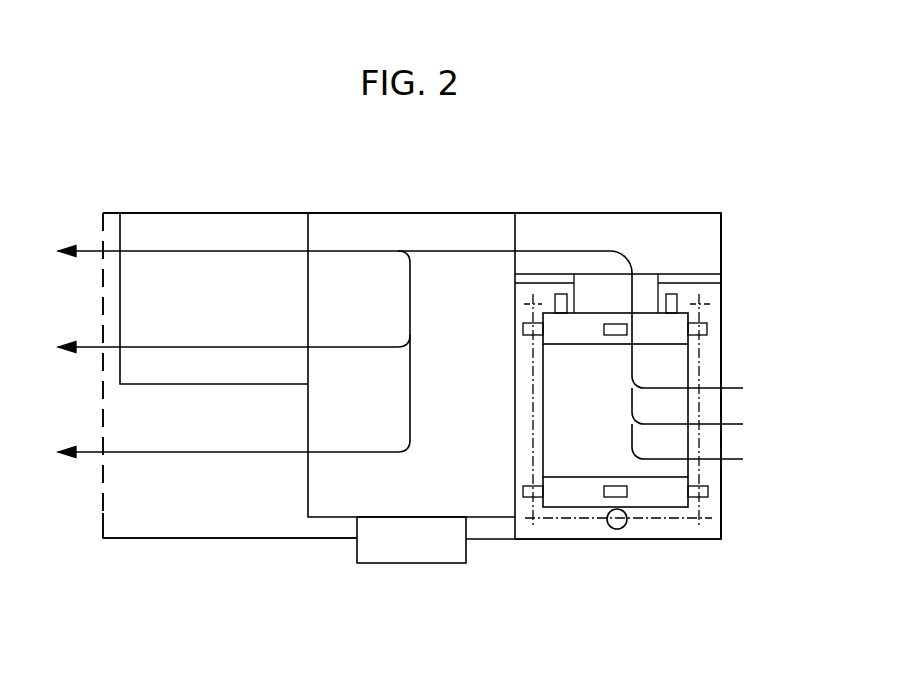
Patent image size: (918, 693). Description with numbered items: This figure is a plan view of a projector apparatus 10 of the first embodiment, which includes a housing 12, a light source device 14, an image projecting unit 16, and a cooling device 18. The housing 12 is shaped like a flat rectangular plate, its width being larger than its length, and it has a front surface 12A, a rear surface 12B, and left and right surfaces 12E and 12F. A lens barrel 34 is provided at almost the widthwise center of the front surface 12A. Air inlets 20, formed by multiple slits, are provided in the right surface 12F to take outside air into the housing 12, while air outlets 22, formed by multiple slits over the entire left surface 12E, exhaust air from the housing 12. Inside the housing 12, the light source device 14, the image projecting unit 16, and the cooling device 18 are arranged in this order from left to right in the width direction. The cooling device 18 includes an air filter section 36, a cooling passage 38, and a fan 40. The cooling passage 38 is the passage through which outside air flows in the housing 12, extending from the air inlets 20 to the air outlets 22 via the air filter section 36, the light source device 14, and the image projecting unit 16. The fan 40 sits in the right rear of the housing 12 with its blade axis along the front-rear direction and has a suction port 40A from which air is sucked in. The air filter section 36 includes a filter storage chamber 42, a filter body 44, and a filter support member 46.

The projector apparatus 10 is at (343, 170).
The housing 12 is at (450, 213).
The front surface 12A is at (160, 540).
The rear surface 12B is at (147, 213).
The left surface 12E is at (101, 523).
The right surface 12F is at (722, 521).
The light source device 14 is at (255, 230).
The image projecting unit 16 is at (399, 235).
The cooling device 18 is at (620, 189).
The air inlets 20 is at (723, 383).
The air outlets 22 is at (101, 372).
The lens barrel 34 is at (402, 550).
The air filter section 36 is at (692, 355).
The cooling passage 38 is at (558, 250).
The fan 40 is at (710, 237).
The suction port 40A is at (652, 288).
The filter storage chamber 42 is at (678, 513).
The filter body 44 is at (565, 448).
The filter support member 46 is at (648, 498).